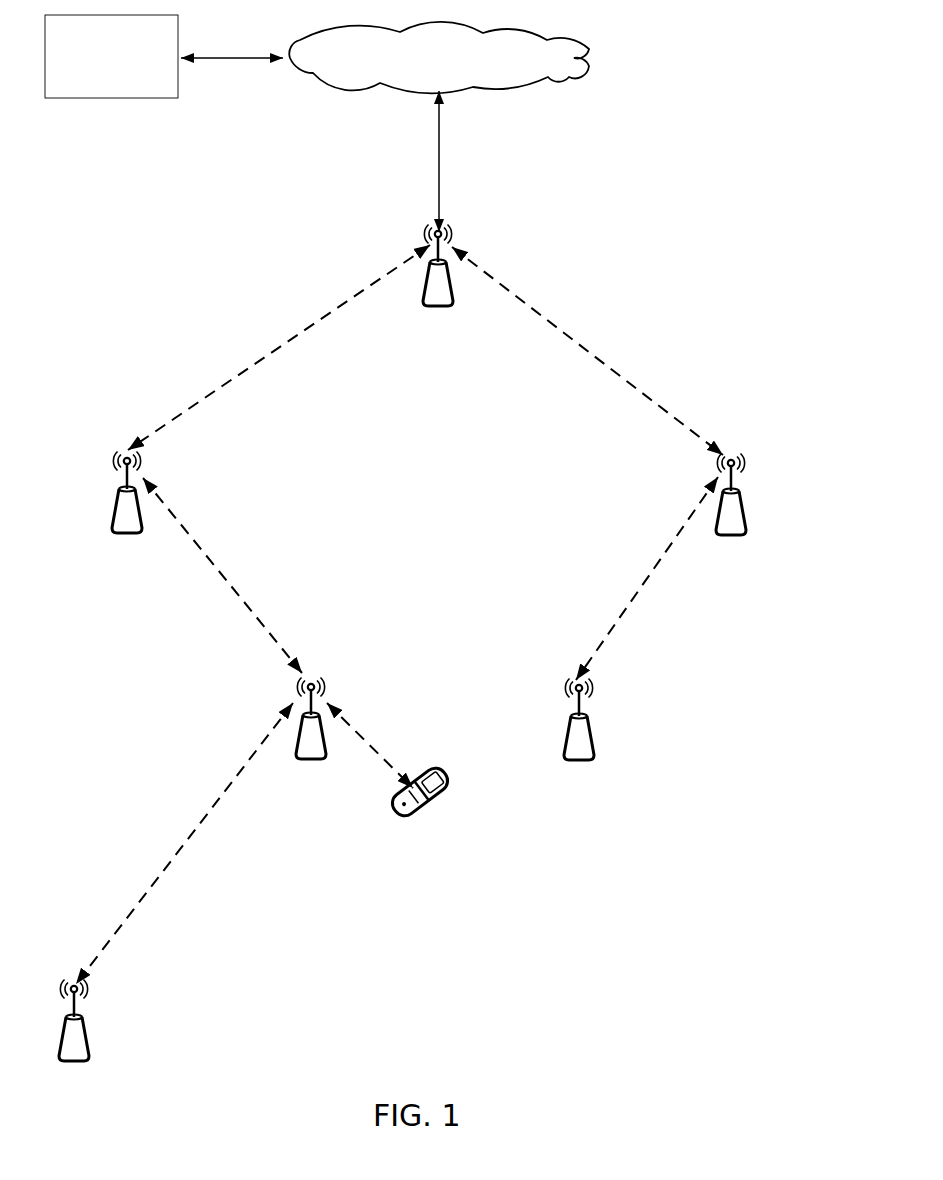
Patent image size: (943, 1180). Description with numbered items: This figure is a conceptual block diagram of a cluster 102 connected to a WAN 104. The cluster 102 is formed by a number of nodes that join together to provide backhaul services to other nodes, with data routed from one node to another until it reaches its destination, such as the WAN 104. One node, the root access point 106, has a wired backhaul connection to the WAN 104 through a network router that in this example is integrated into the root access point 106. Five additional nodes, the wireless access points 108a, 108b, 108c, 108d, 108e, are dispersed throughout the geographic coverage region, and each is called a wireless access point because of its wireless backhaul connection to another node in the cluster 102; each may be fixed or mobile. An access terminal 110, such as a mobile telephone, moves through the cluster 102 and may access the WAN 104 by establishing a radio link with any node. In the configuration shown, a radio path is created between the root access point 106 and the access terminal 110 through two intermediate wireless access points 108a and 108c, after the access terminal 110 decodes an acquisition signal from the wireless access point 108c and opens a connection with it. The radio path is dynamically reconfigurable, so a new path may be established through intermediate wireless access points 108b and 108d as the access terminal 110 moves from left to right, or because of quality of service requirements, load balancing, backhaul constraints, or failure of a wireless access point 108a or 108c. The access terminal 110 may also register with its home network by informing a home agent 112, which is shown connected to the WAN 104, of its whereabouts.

The cluster 102 is at (770, 106).
The WAN 104 is at (439, 57).
The root access point 106 is at (438, 282).
The wireless access point 108a is at (134, 511).
The wireless access point 108b is at (738, 513).
The wireless access point 108c is at (310, 734).
The wireless access point 108d is at (586, 735).
The wireless access point 108e is at (75, 1036).
The access terminal 110 is at (420, 801).
The home agent 112 is at (111, 56).